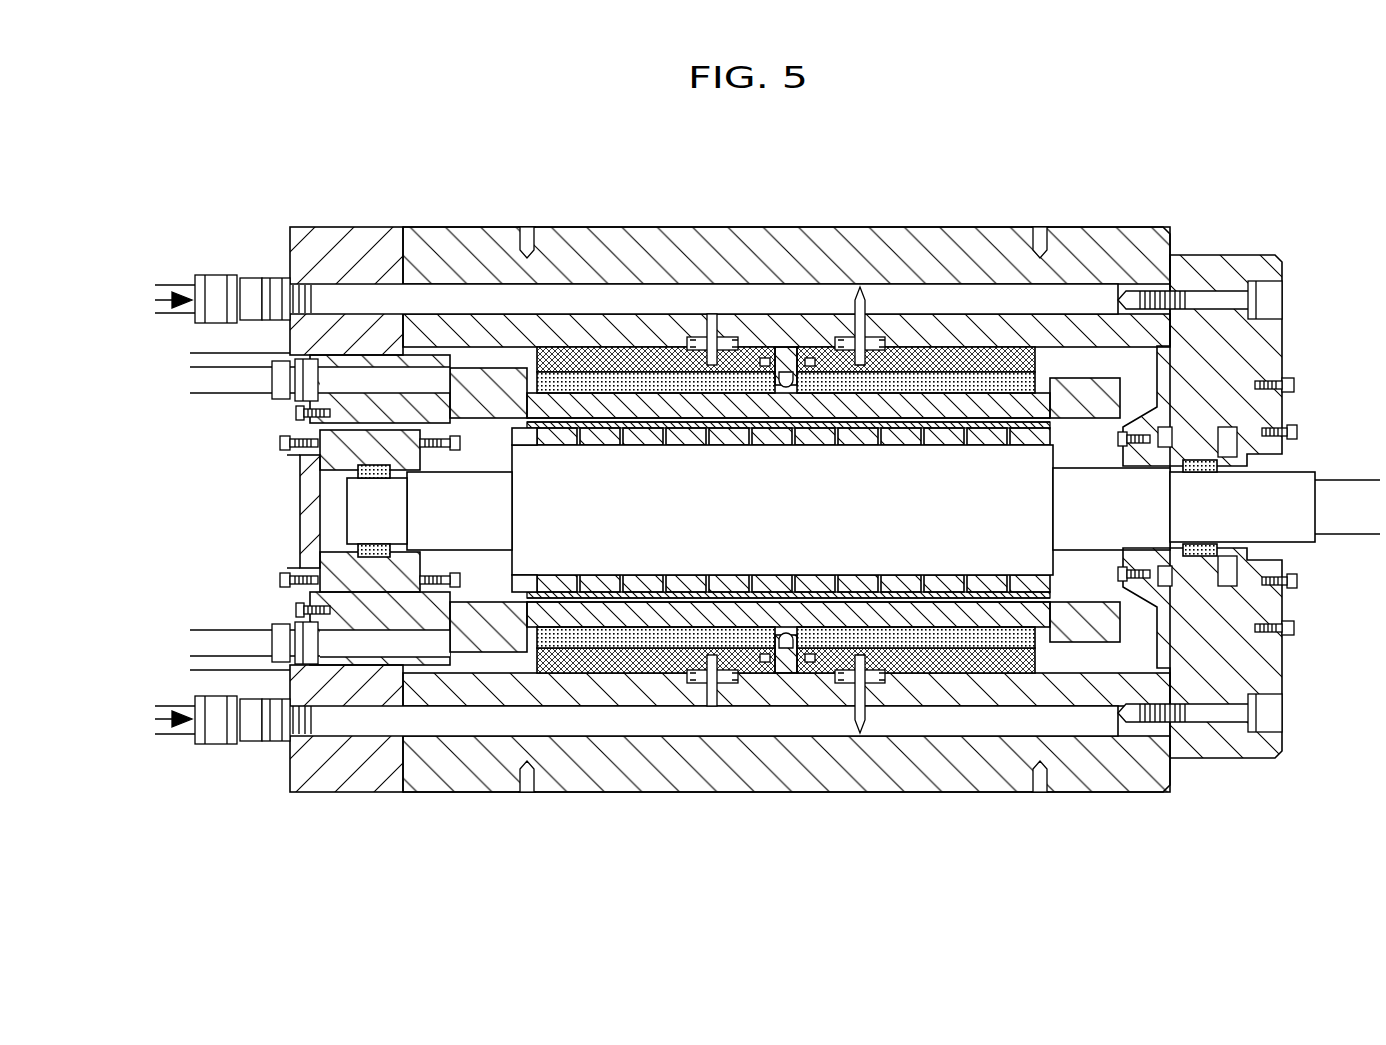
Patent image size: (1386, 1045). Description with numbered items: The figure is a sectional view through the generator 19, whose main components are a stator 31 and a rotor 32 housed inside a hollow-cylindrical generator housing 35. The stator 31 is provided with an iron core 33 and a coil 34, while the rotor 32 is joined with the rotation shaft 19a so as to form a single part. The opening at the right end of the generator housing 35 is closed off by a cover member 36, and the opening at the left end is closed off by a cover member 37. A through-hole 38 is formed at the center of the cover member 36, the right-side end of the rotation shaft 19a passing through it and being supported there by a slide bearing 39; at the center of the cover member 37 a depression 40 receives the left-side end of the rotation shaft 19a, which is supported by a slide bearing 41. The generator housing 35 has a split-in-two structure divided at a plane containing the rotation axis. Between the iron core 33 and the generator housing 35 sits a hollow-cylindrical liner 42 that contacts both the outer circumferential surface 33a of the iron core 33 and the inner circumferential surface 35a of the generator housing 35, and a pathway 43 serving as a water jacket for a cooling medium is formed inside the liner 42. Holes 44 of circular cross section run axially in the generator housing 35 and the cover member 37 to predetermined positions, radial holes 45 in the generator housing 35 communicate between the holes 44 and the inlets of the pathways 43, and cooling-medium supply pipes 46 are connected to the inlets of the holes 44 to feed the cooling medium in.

The generator 19 is at (1218, 200).
The rotation shaft 19a is at (1354, 485).
The stator 31 is at (890, 522).
The rotor 32 is at (1032, 510).
The iron core 33 is at (695, 385).
The outer circumferential surface of the iron core 33a is at (600, 376).
The coil 34 is at (610, 410).
The generator housing 35 is at (792, 245).
The inner circumferential surface of the generator housing 35a is at (568, 350).
The cover member 36 is at (1268, 354).
The cover member 37 is at (343, 246).
The through-hole 38 is at (1274, 542).
The slide bearing 39 is at (1194, 472).
The depression 40 is at (330, 553).
The slide bearing 41 is at (378, 470).
The liner 42 is at (641, 352).
The pathway 43 is at (676, 364).
The holes 44 is at (463, 290).
The holes 45 is at (713, 328).
The cooling-medium supply pipes 46 is at (176, 296).